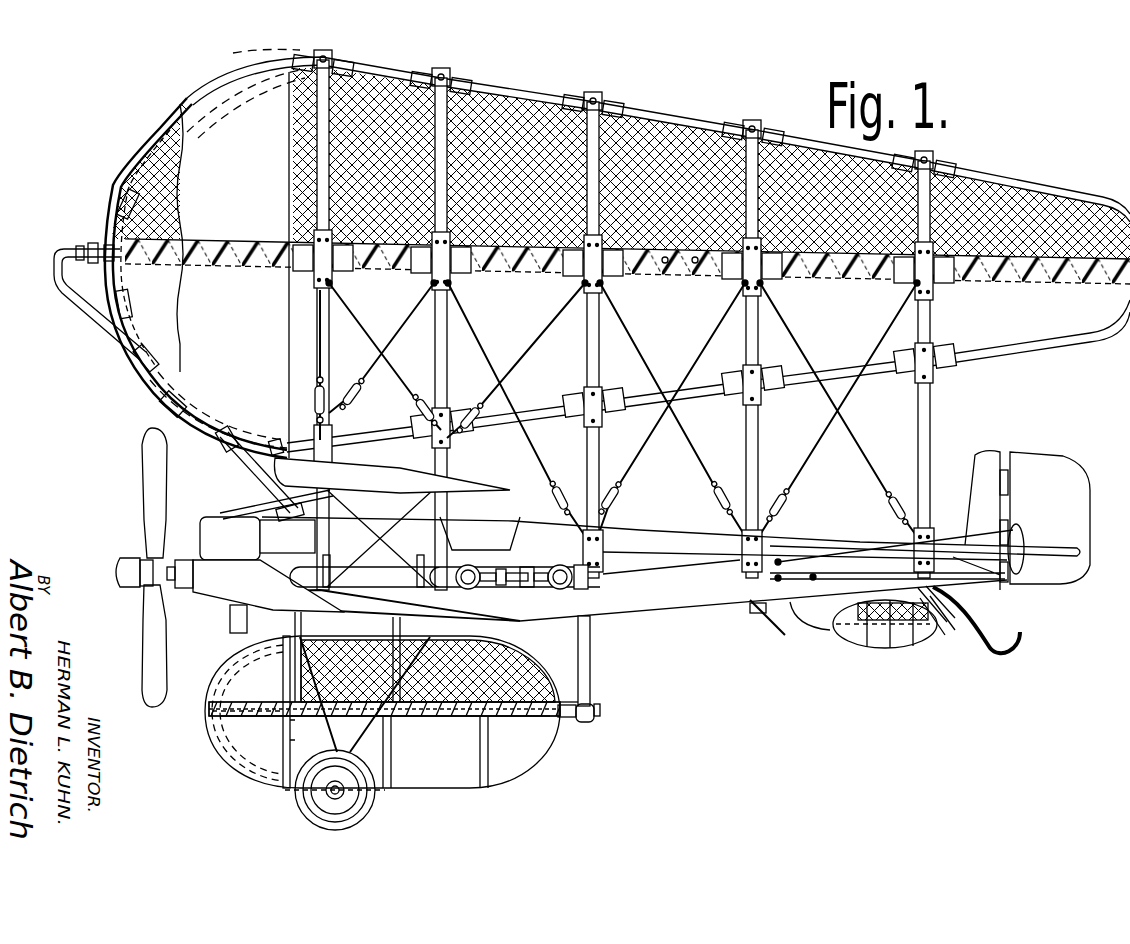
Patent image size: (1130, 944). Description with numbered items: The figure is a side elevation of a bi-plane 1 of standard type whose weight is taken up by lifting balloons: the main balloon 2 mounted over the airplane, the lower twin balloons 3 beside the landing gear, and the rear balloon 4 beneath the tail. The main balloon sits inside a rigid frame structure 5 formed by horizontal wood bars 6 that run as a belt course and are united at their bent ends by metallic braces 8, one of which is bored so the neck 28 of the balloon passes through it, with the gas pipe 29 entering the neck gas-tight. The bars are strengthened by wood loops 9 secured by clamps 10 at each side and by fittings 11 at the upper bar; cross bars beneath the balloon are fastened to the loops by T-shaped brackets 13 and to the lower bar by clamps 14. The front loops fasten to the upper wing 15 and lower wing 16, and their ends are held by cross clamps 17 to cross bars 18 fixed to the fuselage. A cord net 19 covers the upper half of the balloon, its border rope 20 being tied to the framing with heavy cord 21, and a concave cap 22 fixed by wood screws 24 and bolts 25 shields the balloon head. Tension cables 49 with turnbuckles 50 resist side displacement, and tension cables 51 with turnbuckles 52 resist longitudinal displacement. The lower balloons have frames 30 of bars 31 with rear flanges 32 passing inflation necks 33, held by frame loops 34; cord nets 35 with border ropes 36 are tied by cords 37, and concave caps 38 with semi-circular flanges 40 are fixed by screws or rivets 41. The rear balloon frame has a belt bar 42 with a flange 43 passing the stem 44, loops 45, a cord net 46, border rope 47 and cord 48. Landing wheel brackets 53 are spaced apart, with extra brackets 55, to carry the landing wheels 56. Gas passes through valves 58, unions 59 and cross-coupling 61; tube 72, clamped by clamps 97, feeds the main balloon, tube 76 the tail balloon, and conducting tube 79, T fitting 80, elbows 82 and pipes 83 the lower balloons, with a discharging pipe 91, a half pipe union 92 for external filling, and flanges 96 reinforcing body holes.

The bi-plane 1 is at (693, 620).
The main lifting balloon 2 is at (1077, 317).
The lower twin lifting balloons 3 is at (445, 782).
The rear lifting balloon 4 is at (540, 103).
The rigid frame structure 5 is at (1030, 190).
The horizontal wood bars 6 is at (658, 278).
The metallic fittings or braces 8 is at (130, 283).
The wood loops 9 is at (316, 338).
The metallic fittings or clamps 10 is at (308, 286).
The fittings 11 is at (360, 62).
The T-shaped fittings or brackets 13 is at (760, 404).
The metallic fittings or clamps 14 is at (750, 380).
The upper wing 15 is at (495, 462).
The lower wing 16 is at (495, 622).
The cross clamps 17 is at (600, 545).
The cross bars 18 is at (930, 534).
The cord net 19 is at (706, 123).
The border rope 20 is at (505, 276).
The heavy cord 21 is at (832, 276).
The concave plate or cap 22 is at (170, 138).
The wood screws 24 is at (236, 68).
The bolts 25 is at (240, 240).
The neck or stem of the balloon 28 is at (290, 665).
The gas pipe 29 is at (106, 250).
The frames of the lower twin balloons 30 is at (418, 720).
The frame bars 31 is at (470, 718).
The flanges 32 is at (580, 702).
The inflation necks or stems 33 is at (212, 720).
The frame loops 34 is at (390, 765).
The cord nets 35 is at (530, 675).
The border ropes 36 is at (492, 725).
The cords 37 is at (440, 785).
The metallic concave plates or caps 38 is at (255, 770).
The semi-circular flanges 40 is at (280, 740).
The screws or rivets 41 is at (292, 740).
The longitudinal belt bar 42 is at (925, 630).
The flange 43 is at (850, 610).
The balloon bung or stem 44 is at (845, 645).
The loops 45 is at (880, 660).
The cord net 46 is at (955, 596).
The border rope 47 is at (960, 608).
The cord 48 is at (322, 632).
The tension cables 49 is at (326, 350).
The turnbuckles 50 is at (312, 402).
The tension cables 51 is at (402, 333).
The turnbuckles 52 is at (355, 404).
The landing wheel brackets 53 is at (430, 628).
The extra set of brackets 55 is at (408, 552).
The landing wheels 56 is at (310, 817).
The valves 58 is at (536, 552).
The unions 59 is at (485, 582).
The cross-coupling 61 is at (530, 582).
The tube 72 is at (246, 481).
The tube 76 is at (812, 630).
The conducting tube 79 is at (592, 655).
The T fitting 80 is at (598, 700).
The elbows 82 is at (582, 716).
The pipes 83 is at (612, 680).
The discharging pipe 91 is at (790, 632).
The half pipe union 92 is at (600, 580).
The flanges 96 is at (285, 522).
The clamps 97 is at (570, 585).